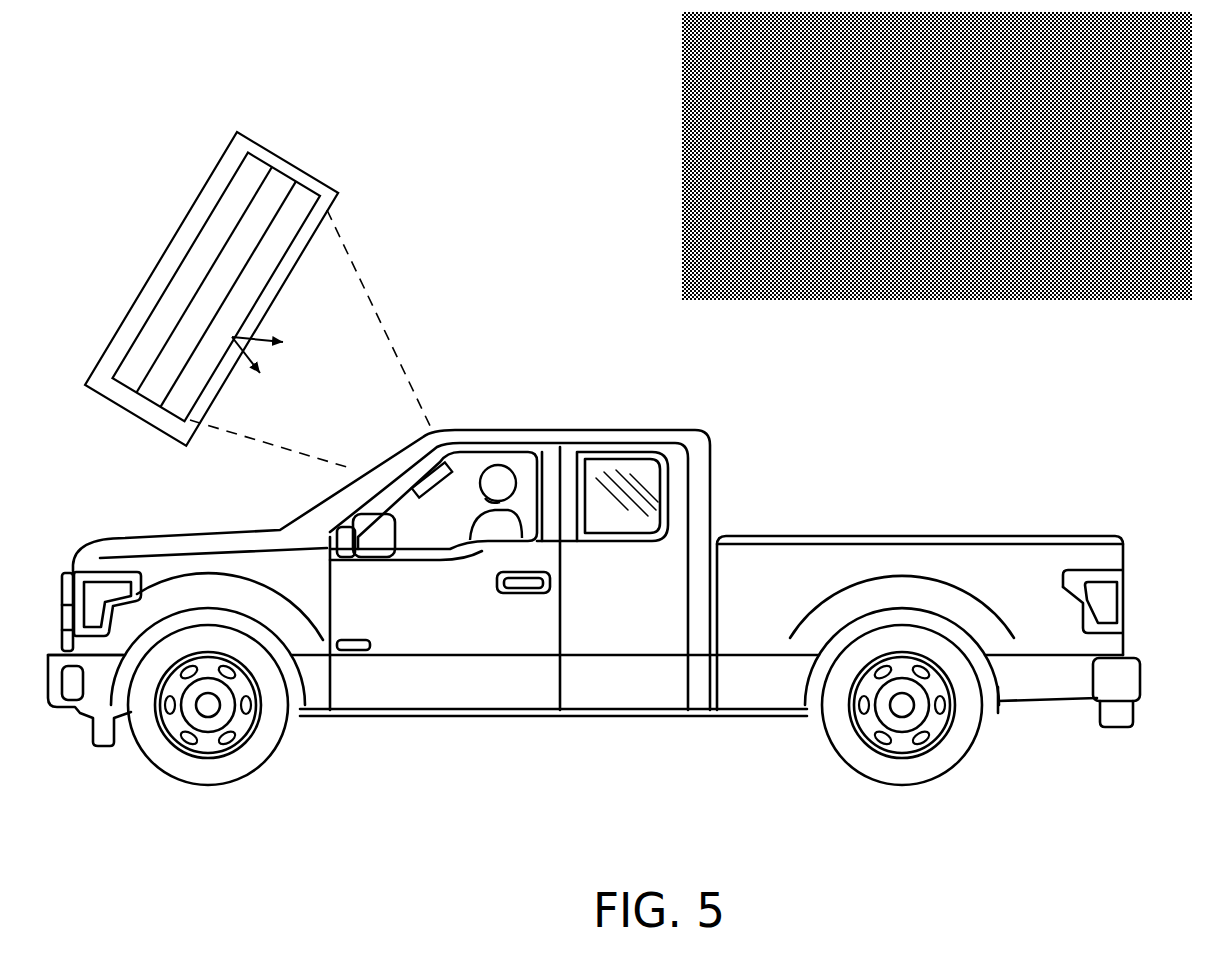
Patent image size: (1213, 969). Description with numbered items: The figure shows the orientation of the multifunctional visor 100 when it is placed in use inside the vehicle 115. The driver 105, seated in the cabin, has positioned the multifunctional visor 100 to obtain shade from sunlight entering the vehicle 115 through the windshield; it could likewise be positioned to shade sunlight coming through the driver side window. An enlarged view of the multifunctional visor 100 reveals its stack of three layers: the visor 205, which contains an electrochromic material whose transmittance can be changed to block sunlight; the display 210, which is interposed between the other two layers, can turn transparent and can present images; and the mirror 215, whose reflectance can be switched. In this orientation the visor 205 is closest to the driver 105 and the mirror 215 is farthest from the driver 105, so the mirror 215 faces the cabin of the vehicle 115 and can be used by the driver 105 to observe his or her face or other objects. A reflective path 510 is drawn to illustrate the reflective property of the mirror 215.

The multifunctional visor 100 is at (300, 160).
The driver 105 is at (473, 452).
The vehicle 115 is at (563, 365).
The visor 205 is at (195, 274).
The display 210 is at (219, 289).
The mirror 215 is at (683, 209).
The reflective path 510 is at (272, 326).